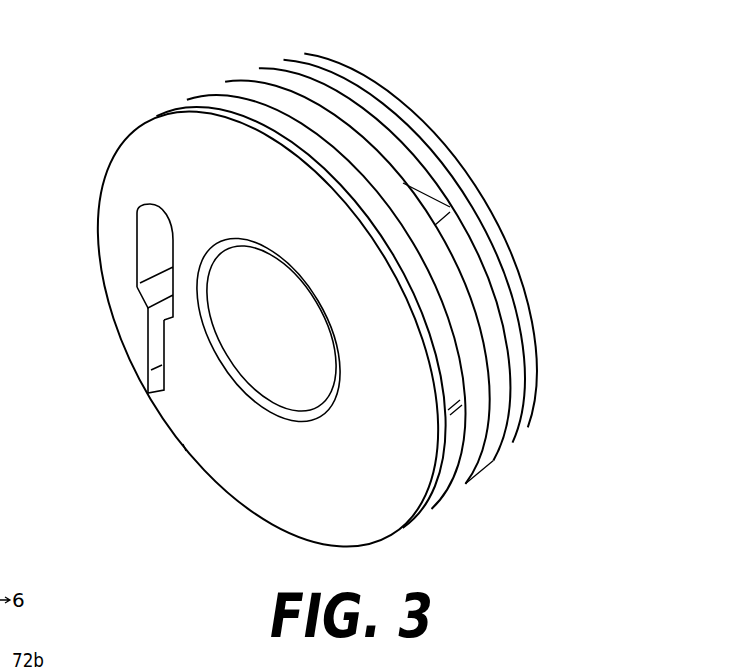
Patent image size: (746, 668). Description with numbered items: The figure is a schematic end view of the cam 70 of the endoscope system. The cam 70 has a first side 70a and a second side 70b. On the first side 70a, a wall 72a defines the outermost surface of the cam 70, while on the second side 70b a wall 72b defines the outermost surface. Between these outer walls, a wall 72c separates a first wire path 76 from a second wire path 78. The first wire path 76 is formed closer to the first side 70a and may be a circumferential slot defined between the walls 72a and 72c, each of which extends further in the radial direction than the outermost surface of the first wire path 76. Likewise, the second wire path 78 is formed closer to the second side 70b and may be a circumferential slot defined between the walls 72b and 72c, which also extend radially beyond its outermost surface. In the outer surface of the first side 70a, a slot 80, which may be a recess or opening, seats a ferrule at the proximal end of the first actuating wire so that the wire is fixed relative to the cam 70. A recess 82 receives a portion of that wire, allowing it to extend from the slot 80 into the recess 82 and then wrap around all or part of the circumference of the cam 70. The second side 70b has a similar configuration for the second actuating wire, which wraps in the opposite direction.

The cam 70 is at (286, 309).
The first side 70a is at (150, 135).
The second side 70b is at (403, 100).
The wall 72a is at (260, 329).
The wall 72b is at (401, 247).
The wall 72c is at (305, 97).
The first wire path 76 is at (292, 134).
The second wire path 78 is at (374, 138).
The slot 80 is at (148, 255).
The recess 82 is at (147, 345).